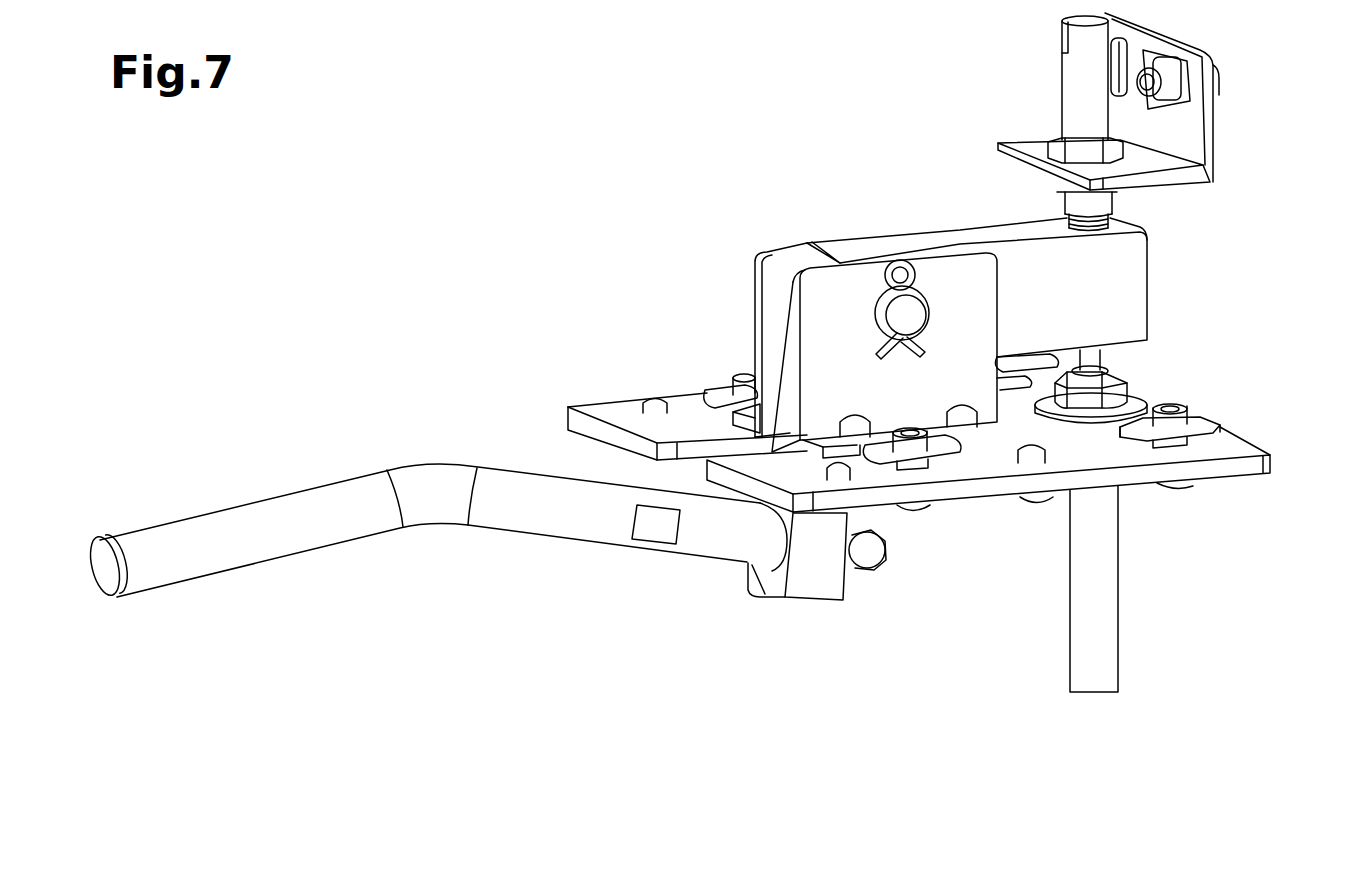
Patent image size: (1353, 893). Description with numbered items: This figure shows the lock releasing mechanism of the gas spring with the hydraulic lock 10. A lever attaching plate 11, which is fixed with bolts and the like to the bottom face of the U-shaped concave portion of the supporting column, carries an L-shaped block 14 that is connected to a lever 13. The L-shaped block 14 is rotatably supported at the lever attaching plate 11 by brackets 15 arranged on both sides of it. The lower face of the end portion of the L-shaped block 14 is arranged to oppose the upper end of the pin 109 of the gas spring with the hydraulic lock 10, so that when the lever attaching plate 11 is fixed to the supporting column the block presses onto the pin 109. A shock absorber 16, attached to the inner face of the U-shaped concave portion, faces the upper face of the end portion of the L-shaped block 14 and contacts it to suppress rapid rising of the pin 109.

The gas spring with the hydraulic lock 10 is at (1088, 658).
The lever attaching plate 11 is at (1187, 468).
The lever 13 is at (195, 537).
The L-shaped block 14 is at (1120, 291).
The brackets 15 is at (837, 330).
The shock absorber 16 is at (1080, 83).
The pin 109 is at (1093, 357).